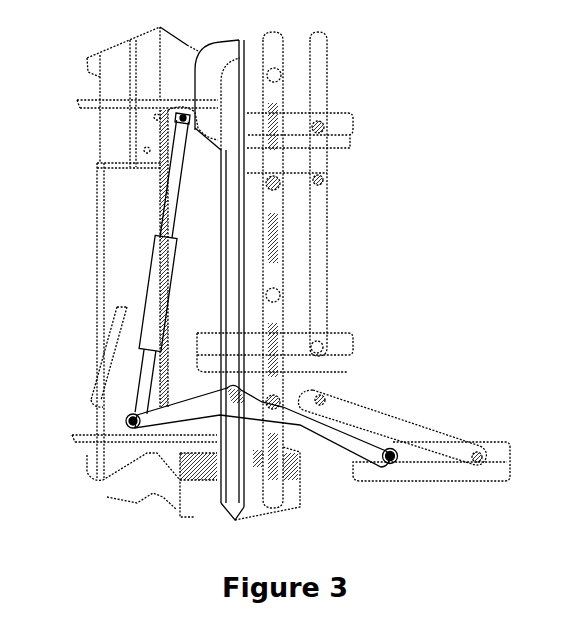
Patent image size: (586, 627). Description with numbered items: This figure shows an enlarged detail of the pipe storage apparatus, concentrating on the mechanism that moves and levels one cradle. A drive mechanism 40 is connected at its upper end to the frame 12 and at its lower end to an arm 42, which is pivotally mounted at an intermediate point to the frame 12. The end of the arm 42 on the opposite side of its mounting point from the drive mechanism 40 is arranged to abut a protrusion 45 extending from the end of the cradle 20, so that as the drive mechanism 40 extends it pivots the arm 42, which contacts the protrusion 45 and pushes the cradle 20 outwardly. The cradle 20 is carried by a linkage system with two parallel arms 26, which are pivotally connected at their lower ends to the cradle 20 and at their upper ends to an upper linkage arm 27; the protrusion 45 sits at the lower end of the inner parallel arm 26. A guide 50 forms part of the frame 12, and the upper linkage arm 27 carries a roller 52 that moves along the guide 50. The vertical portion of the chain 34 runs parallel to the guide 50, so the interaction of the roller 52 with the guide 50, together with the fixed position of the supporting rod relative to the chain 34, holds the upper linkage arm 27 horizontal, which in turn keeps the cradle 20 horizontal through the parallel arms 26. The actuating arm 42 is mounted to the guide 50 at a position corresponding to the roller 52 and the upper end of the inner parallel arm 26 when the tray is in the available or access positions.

The frame 12 is at (120, 200).
The drive mechanism 40 is at (152, 285).
The guide 50 is at (233, 242).
The chain 34 is at (273, 315).
The upper linkage arm 27 is at (296, 180).
The parallel arms 26 is at (317, 262).
The cradle 20 is at (338, 343).
The arm 42 is at (345, 428).
The protrusion 45 is at (388, 452).
The roller 52 is at (230, 398).